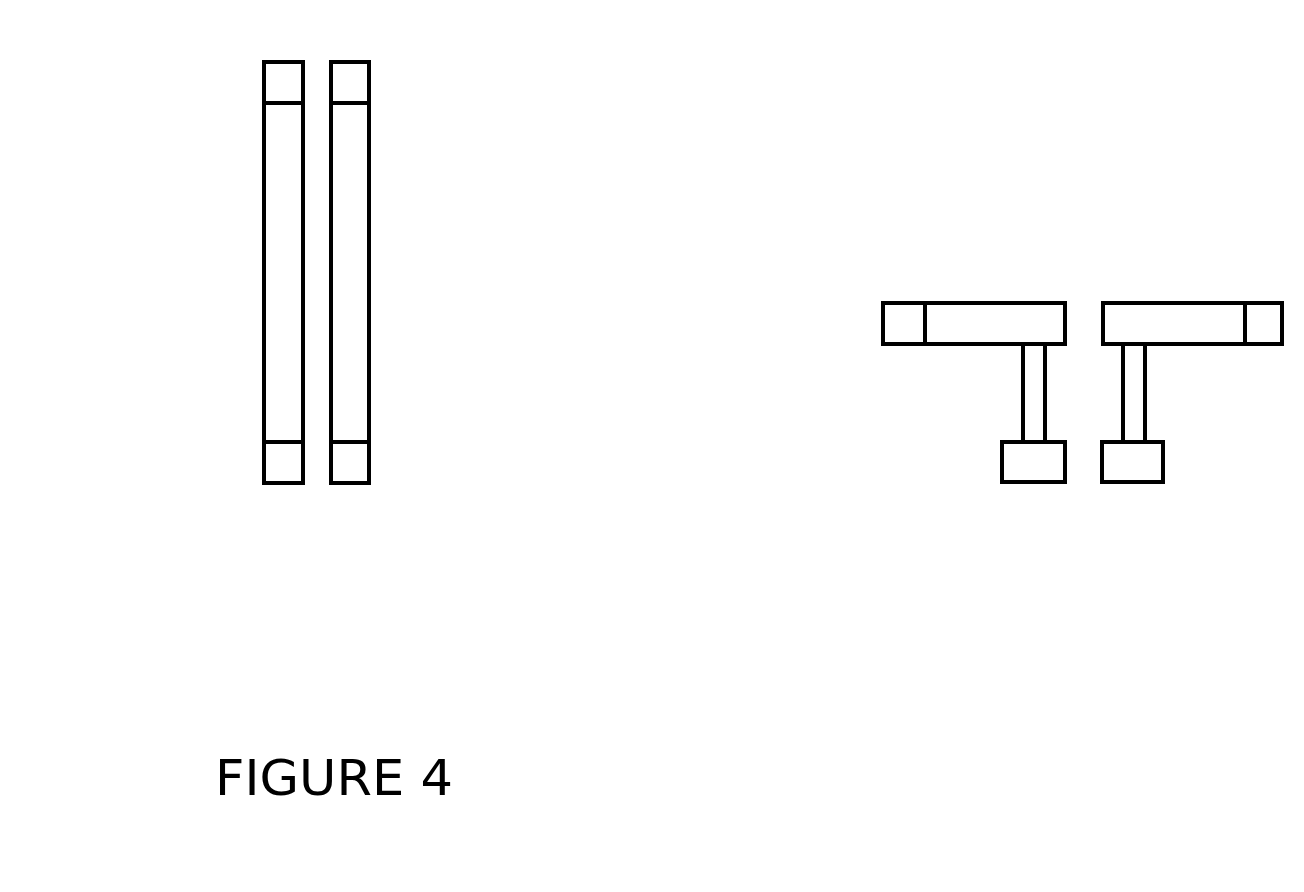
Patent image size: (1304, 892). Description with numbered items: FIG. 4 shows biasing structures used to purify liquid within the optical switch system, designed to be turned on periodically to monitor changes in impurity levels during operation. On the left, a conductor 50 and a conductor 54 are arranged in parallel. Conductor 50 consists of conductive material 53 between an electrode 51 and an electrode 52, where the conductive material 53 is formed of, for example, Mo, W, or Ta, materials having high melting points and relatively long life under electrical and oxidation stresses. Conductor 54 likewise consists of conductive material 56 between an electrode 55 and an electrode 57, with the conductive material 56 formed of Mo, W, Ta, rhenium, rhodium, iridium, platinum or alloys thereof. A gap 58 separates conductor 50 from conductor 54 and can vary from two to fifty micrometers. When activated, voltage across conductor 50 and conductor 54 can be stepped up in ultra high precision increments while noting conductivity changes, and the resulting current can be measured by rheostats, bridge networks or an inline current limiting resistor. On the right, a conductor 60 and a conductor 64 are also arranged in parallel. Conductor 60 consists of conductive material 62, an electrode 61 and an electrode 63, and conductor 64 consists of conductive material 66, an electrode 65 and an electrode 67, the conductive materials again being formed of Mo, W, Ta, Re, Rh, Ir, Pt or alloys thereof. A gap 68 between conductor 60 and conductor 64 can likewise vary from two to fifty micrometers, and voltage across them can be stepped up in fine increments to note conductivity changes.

The conductor 50 is at (404, 274).
The electrode 51 is at (371, 458).
The electrode 52 is at (371, 75).
The conductive material 53 is at (371, 235).
The conductor 54 is at (228, 270).
The electrode 55 is at (263, 460).
The conductive material 56 is at (262, 243).
The electrode 57 is at (262, 82).
The gap 58 is at (316, 488).
The conductor 60 is at (974, 354).
The electrode 61 is at (896, 300).
The conductive material 62 is at (1033, 300).
The electrode 63 is at (1026, 483).
The conductor 64 is at (1190, 354).
The electrode 65 is at (1271, 300).
The conductive material 66 is at (1152, 300).
The electrode 67 is at (1125, 483).
The gap 68 is at (1082, 296).